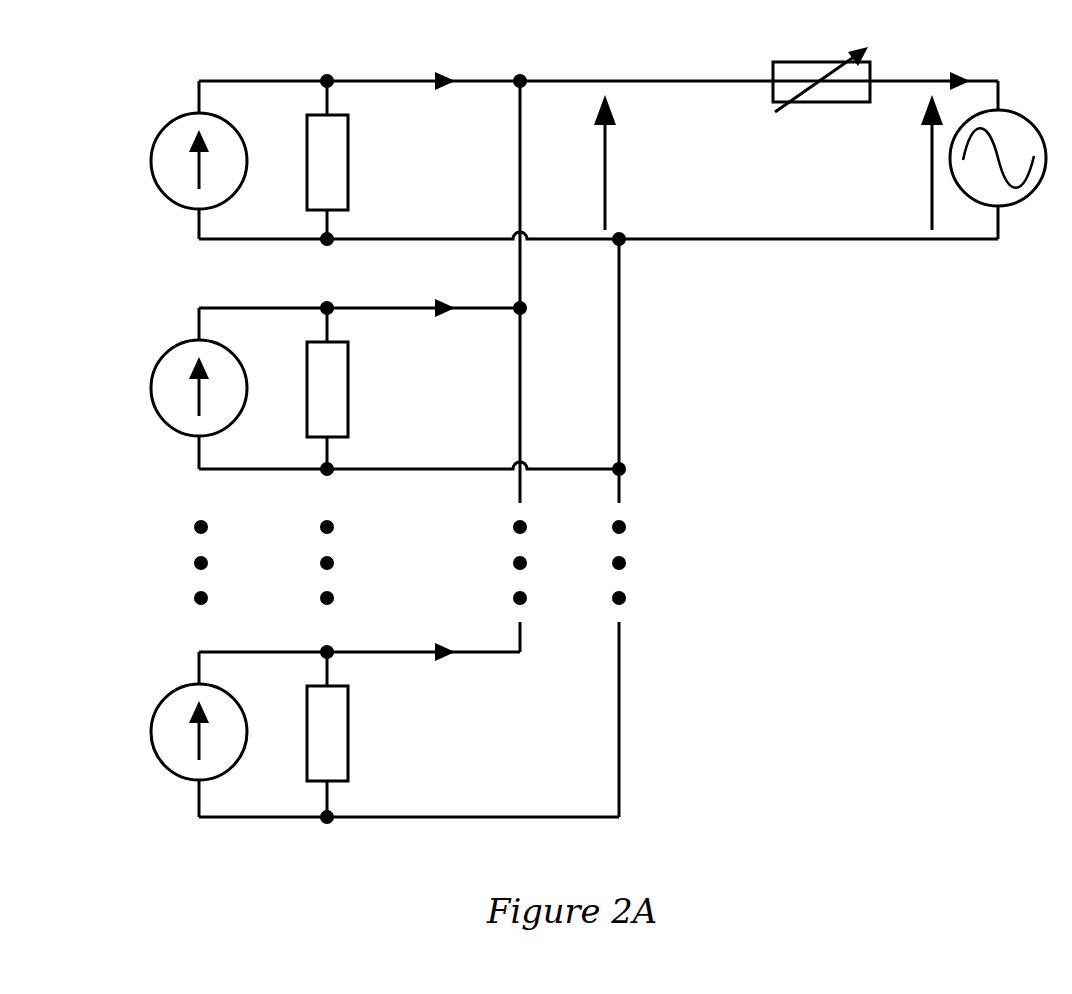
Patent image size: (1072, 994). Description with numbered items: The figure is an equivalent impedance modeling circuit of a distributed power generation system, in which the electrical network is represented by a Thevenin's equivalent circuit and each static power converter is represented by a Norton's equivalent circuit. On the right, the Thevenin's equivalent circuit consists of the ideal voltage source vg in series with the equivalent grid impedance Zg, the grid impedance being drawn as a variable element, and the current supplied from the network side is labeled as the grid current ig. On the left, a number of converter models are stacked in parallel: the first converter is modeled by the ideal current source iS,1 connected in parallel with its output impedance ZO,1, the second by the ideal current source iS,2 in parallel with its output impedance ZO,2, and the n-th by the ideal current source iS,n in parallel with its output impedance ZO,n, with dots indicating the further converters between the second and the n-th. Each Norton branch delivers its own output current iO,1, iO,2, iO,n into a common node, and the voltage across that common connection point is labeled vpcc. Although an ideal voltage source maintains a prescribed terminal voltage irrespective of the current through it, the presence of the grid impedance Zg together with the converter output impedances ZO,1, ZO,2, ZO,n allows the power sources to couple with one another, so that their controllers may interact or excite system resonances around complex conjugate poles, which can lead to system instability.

The ideal current source iS,1 is at (176, 160).
The ideal current source iS,2 is at (176, 388).
The ideal current source iS,n is at (176, 734).
The output impedance ZO,1 is at (363, 160).
The output impedance ZO,2 is at (363, 388).
The output impedance ZO,n is at (363, 734).
The output current of inverter 1 iO,1 is at (443, 62).
The output current of inverter 2 iO,2 is at (443, 289).
The output current of inverter n iO,n is at (443, 634).
The voltage at point of common coupling vpcc is at (577, 162).
The equivalent grid impedance Zg is at (821, 64).
The grid current ig is at (958, 62).
The ideal voltage source vg is at (911, 162).